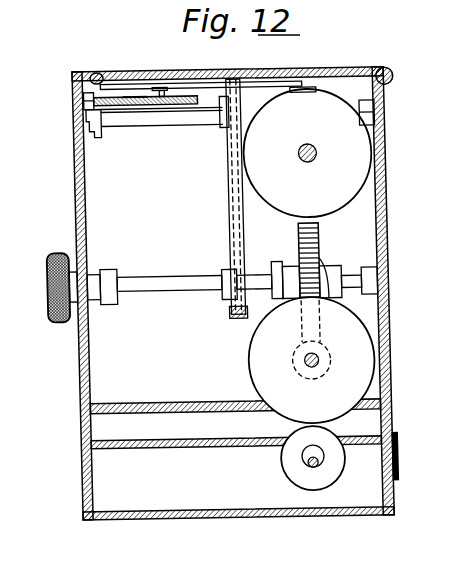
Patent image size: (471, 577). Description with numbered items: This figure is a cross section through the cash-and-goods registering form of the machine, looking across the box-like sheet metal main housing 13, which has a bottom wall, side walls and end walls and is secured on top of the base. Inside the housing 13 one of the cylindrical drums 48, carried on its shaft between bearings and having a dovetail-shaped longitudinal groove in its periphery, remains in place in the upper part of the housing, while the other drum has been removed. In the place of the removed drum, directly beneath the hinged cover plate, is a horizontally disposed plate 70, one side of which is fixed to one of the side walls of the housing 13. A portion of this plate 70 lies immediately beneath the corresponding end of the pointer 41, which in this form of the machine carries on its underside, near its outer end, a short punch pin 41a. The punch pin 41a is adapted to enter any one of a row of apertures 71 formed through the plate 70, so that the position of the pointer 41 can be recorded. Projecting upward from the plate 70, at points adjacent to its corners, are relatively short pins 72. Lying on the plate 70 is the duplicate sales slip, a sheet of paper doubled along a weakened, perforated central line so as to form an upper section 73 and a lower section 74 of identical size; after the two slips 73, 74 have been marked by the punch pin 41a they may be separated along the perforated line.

The main housing 13 is at (75, 203).
The pointer 41 is at (200, 83).
The punch pin 41a is at (165, 92).
The drum 48 is at (309, 153).
The horizontally disposed plate 70 is at (132, 110).
The apertures 71 is at (157, 100).
The pins 72 is at (93, 97).
The upper section of sales slip 73 is at (114, 97).
The lower section of sales slip 74 is at (137, 100).